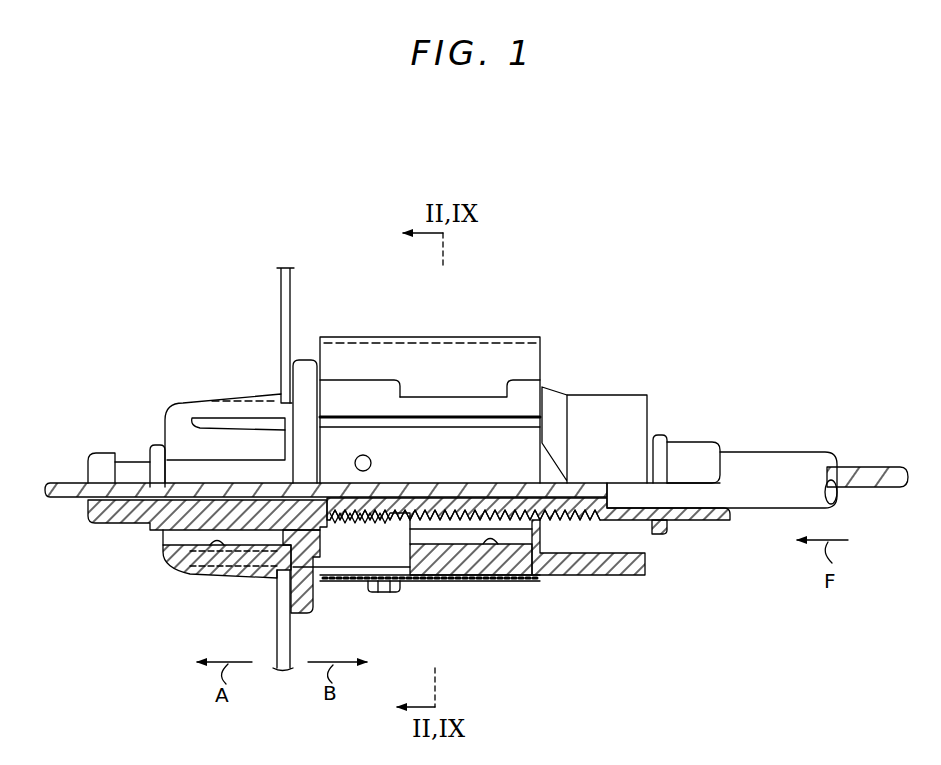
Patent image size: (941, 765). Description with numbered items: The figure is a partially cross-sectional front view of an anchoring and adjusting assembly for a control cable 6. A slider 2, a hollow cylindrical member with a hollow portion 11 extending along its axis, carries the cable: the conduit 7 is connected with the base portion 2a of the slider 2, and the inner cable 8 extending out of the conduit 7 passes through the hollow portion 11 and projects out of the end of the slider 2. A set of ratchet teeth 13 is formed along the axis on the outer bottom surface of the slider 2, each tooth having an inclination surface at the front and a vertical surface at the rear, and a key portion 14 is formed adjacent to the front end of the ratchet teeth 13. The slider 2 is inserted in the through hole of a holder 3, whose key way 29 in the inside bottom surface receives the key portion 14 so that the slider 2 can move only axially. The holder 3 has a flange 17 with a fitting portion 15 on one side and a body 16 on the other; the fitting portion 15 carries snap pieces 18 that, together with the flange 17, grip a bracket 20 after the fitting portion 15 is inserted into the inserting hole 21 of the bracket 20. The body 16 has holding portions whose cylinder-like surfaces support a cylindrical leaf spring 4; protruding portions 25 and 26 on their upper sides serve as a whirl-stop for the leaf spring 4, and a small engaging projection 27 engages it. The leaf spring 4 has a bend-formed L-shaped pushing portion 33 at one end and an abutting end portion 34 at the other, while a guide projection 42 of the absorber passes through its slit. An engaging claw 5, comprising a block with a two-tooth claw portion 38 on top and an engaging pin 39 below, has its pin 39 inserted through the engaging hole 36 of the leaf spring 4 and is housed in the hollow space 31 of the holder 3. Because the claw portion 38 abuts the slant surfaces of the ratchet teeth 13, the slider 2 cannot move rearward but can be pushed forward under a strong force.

The slider 2 is at (113, 445).
The base portion 2a is at (718, 522).
The holder 3 is at (605, 577).
The leaf spring 4 is at (451, 363).
The engaging claw 5 is at (423, 560).
The control cable 6 is at (757, 415).
The conduit 7 is at (802, 451).
The inner cable 8 is at (860, 466).
The hollow portion 11 is at (147, 532).
The ratchet teeth 13 is at (545, 523).
The key portion 14 is at (268, 567).
The fitting portion 15 is at (215, 391).
The body 16 is at (571, 390).
The flange 17 is at (306, 352).
The snap pieces 18 is at (271, 393).
The bracket 20 is at (281, 297).
The inserting hole 21 is at (279, 570).
The protruding portion 25 is at (366, 392).
The protruding portion 26 is at (549, 384).
The engaging projection 27 is at (371, 459).
The key way 29 is at (216, 546).
The hollow space 31 is at (345, 524).
The pushing portion 33 is at (412, 336).
The abutting end portion 34 is at (474, 416).
The engaging hole 36 is at (383, 593).
The claw portion 38 is at (370, 585).
The engaging pin 39 is at (407, 560).
The guide projection 42 is at (430, 396).